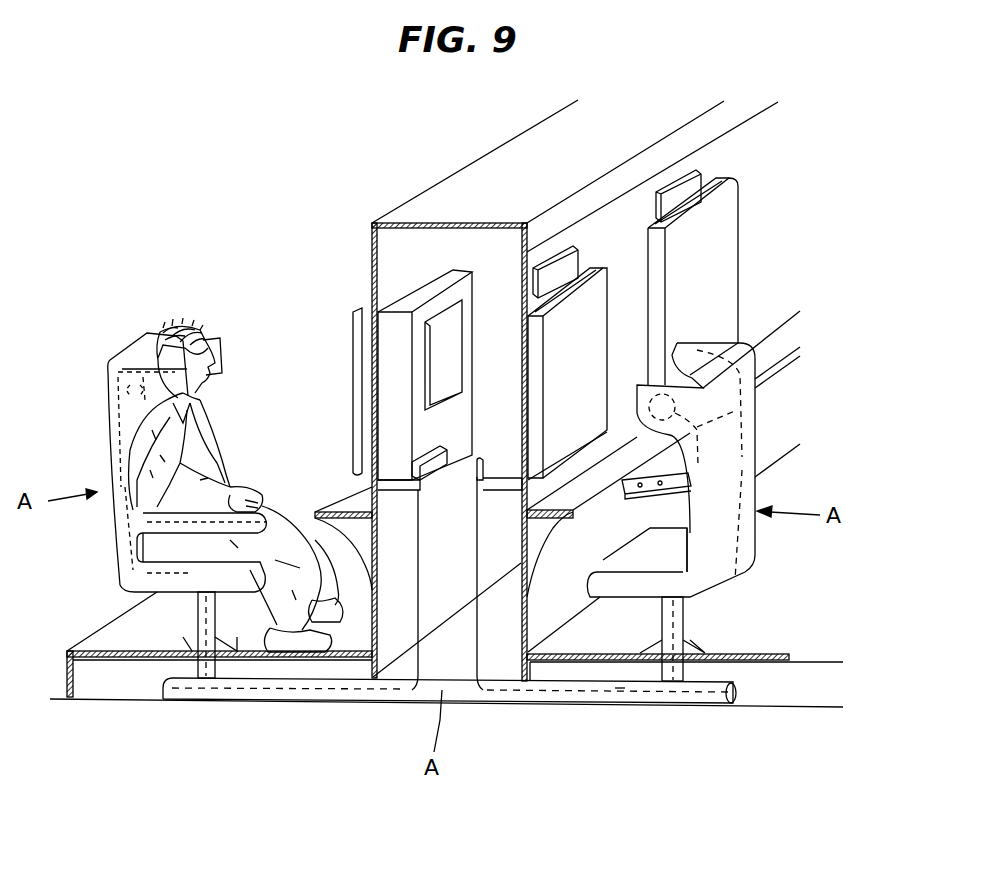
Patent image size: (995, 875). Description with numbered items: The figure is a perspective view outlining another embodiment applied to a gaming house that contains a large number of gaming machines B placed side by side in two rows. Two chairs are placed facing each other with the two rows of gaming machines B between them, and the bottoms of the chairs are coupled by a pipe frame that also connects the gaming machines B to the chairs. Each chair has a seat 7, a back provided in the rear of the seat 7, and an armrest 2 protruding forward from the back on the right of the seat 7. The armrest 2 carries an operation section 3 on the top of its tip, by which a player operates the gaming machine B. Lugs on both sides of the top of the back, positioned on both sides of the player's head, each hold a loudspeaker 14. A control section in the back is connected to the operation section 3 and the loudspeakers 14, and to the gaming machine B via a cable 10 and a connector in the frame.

The armrest 2 is at (205, 512).
The operation section 3 is at (270, 492).
The seat 7 is at (176, 593).
The cable 10 is at (276, 690).
The loudspeaker 14 is at (120, 346).
The gaming machine B is at (352, 320).